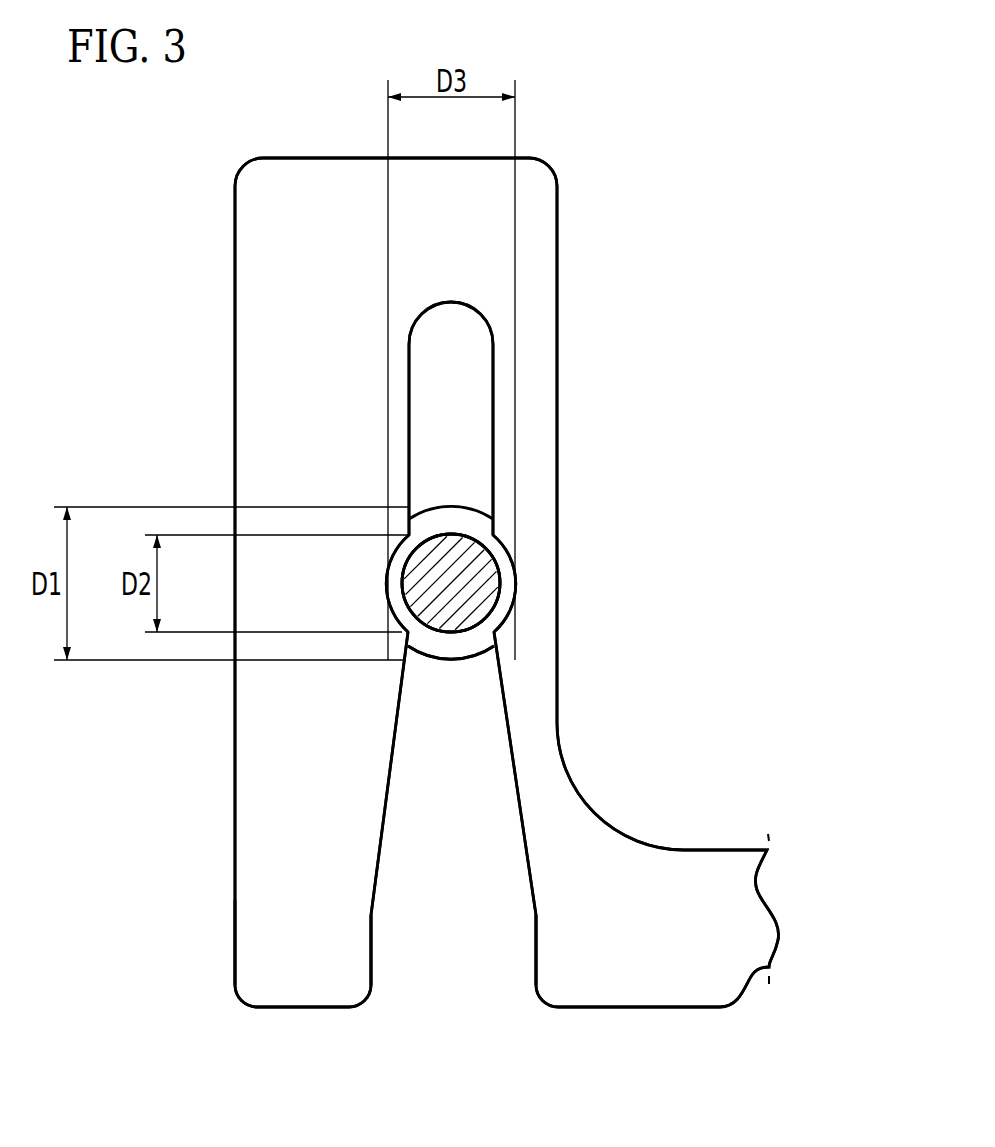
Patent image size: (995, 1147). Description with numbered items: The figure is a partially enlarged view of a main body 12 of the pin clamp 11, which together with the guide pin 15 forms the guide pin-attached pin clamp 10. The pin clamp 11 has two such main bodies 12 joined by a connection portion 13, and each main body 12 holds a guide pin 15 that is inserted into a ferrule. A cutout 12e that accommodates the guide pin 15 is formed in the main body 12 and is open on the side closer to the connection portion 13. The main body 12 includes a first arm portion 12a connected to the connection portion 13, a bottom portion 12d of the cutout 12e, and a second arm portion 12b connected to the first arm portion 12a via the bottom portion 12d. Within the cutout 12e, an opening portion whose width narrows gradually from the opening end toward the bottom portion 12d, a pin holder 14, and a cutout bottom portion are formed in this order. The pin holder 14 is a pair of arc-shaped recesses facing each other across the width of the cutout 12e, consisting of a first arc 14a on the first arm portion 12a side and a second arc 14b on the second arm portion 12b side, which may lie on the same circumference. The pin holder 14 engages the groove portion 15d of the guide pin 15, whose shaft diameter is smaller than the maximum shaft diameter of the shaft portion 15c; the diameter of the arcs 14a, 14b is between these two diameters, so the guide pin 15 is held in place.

The guide pin-attached pin clamp 10 is at (680, 232).
The pin clamp 11 is at (225, 945).
The main body 12 is at (297, 989).
The first arm portion 12a is at (537, 498).
The second arm portion 12b is at (262, 478).
The bottom portion 12d is at (447, 193).
The cutout 12e is at (450, 955).
The connection portion 13 is at (640, 988).
The pin holder 14 is at (429, 642).
The first arc 14a is at (500, 590).
The second arc 14b is at (393, 590).
The guide pin 15 is at (480, 500).
The shaft portion 15c is at (474, 660).
The groove portion 15d is at (500, 592).